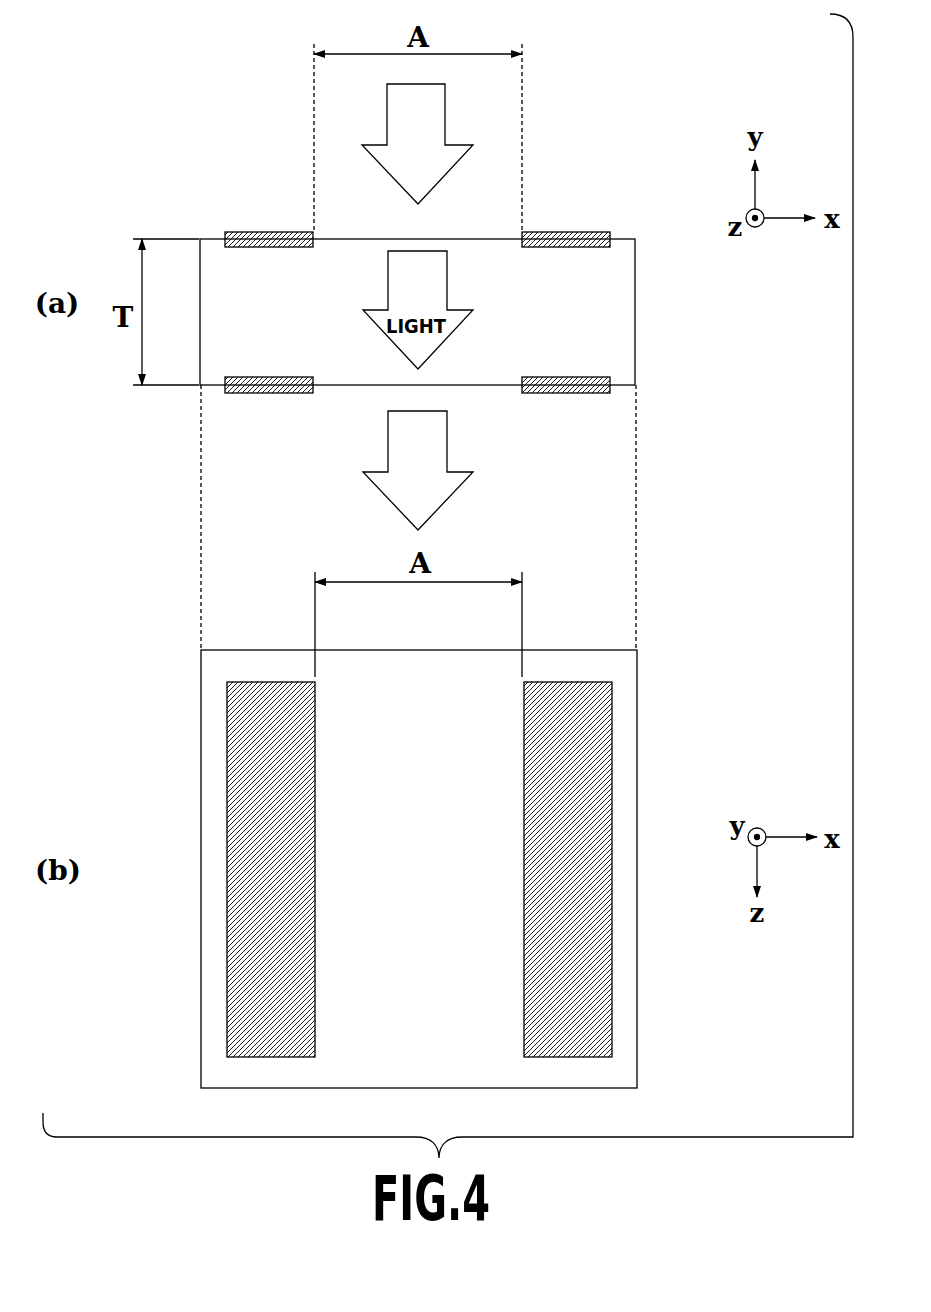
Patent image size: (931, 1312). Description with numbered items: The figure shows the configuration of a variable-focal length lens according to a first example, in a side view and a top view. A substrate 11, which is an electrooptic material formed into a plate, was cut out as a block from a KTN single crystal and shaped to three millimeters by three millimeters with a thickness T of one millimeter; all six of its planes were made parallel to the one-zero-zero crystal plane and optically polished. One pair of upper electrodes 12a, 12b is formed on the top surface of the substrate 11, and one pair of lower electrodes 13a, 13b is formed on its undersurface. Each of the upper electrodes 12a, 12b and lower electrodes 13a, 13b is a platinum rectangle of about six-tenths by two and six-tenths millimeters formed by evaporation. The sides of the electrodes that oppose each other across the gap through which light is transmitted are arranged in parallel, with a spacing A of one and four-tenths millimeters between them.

The substrate 11 is at (620, 305).
The upper electrode 12a is at (270, 232).
The upper electrode 12b is at (568, 232).
The lower electrode 13a is at (270, 395).
The lower electrode 13b is at (568, 395).